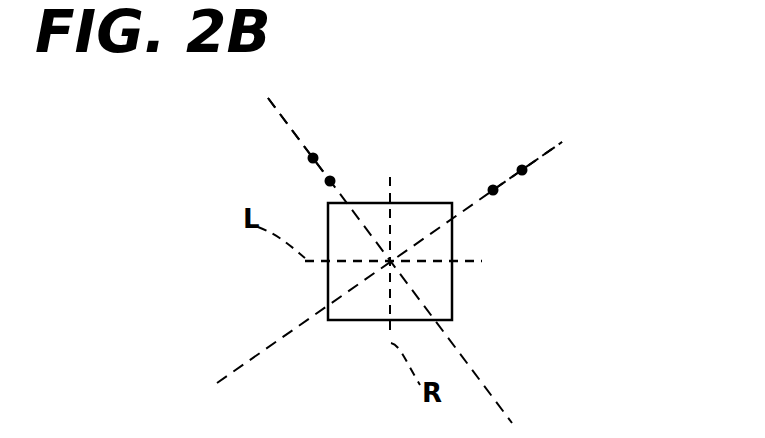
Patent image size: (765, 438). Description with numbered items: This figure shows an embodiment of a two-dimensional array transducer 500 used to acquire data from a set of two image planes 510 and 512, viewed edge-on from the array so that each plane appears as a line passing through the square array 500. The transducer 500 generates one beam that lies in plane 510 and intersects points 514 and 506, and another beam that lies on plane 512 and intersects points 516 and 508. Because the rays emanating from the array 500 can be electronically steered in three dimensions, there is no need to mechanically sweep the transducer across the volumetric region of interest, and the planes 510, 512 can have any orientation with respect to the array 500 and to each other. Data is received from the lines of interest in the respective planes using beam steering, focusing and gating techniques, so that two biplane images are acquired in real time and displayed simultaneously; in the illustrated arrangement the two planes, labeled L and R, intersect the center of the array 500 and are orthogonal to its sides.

The two-dimensional array transducer 500 is at (413, 203).
The point 506 is at (527, 171).
The point 508 is at (308, 157).
The plane 510 is at (557, 138).
The plane 512 is at (296, 126).
The point 514 is at (498, 193).
The point 516 is at (325, 180).